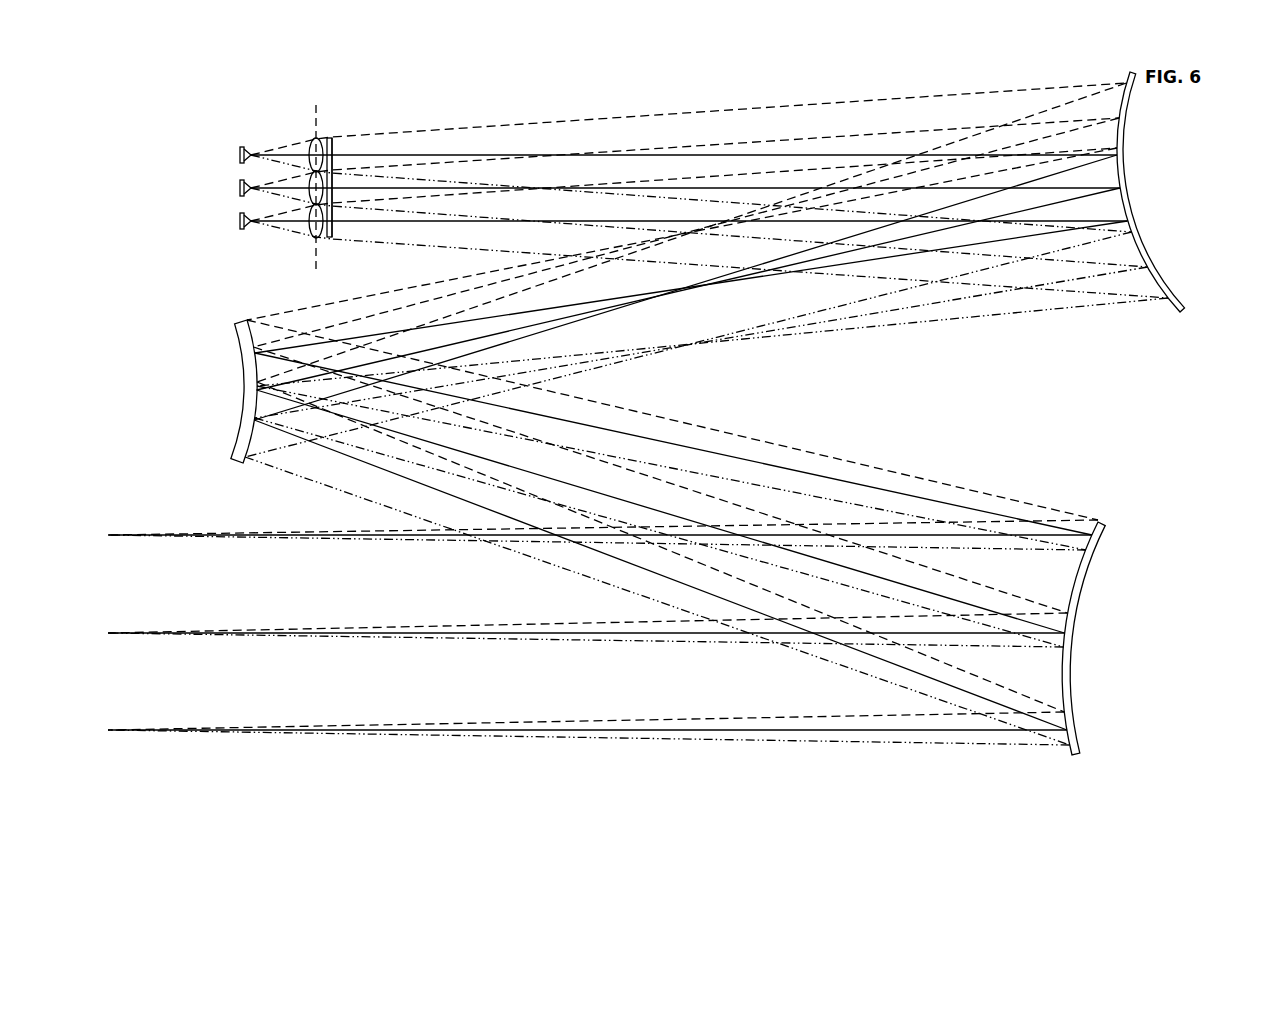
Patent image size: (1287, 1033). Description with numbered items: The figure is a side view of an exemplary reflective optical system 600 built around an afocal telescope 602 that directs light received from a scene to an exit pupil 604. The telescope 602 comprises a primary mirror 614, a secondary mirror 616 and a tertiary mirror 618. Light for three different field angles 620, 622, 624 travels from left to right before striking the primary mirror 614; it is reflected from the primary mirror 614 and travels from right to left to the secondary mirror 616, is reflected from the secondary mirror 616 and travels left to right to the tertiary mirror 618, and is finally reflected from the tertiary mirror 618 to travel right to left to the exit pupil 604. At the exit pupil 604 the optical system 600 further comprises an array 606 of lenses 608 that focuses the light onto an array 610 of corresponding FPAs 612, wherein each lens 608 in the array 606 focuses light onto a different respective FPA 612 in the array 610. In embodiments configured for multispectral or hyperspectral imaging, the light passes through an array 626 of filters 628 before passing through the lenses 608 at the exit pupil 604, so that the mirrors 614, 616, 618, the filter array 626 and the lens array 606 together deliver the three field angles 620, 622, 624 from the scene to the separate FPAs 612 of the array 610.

The reflective optical system 600 is at (1183, 406).
The afocal telescope 602 is at (496, 789).
The exit pupil 604 is at (313, 273).
The array of lenses 606 is at (294, 110).
The lens 608 is at (310, 236).
The array of FPAs 610 is at (220, 253).
The FPA 612 is at (240, 215).
The primary mirror 614 is at (1093, 597).
The secondary mirror 616 is at (236, 345).
The tertiary mirror 618 is at (1152, 220).
The field angle 620 is at (622, 622).
The field angle 622 is at (855, 730).
The field angle 624 is at (928, 744).
The array of filters 626 is at (339, 110).
The filter 628 is at (333, 236).